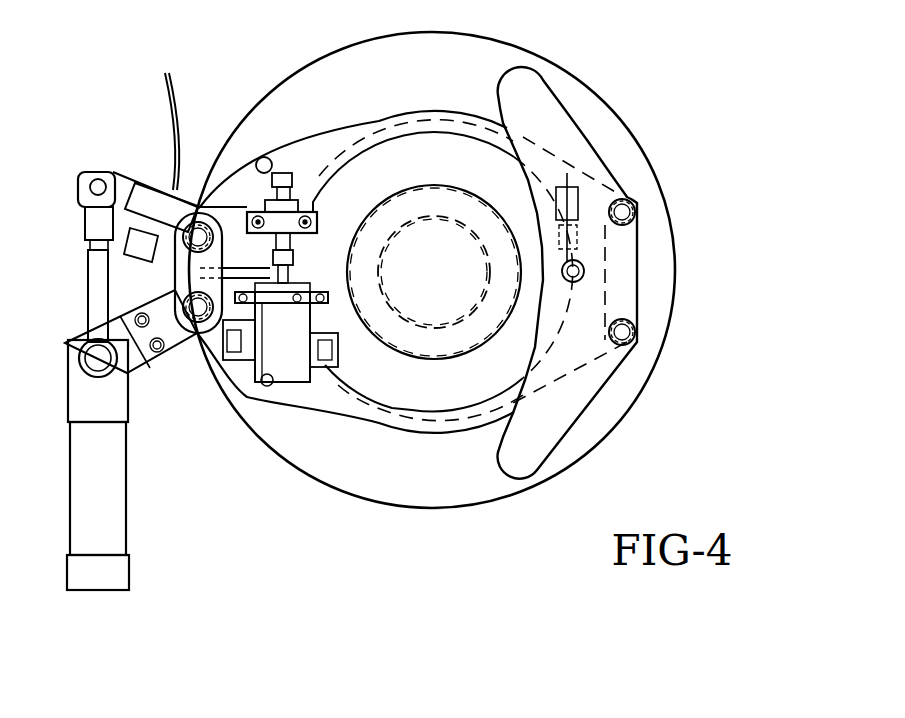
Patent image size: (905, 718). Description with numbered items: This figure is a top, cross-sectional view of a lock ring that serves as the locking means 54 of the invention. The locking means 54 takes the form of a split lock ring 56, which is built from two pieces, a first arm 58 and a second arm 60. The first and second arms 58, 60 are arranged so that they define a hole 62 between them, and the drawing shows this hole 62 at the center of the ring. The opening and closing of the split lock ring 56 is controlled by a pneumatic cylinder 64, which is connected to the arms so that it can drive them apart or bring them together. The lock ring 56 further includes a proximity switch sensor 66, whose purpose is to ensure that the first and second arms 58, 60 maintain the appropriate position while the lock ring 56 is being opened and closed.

The locking means 54 is at (305, 498).
The split lock ring 56 is at (398, 388).
The first arm 58 is at (377, 178).
The second arm 60 is at (443, 393).
The hole 62 is at (418, 285).
The pneumatic cylinder 64 is at (128, 495).
The proximity switch sensor 66 is at (170, 257).